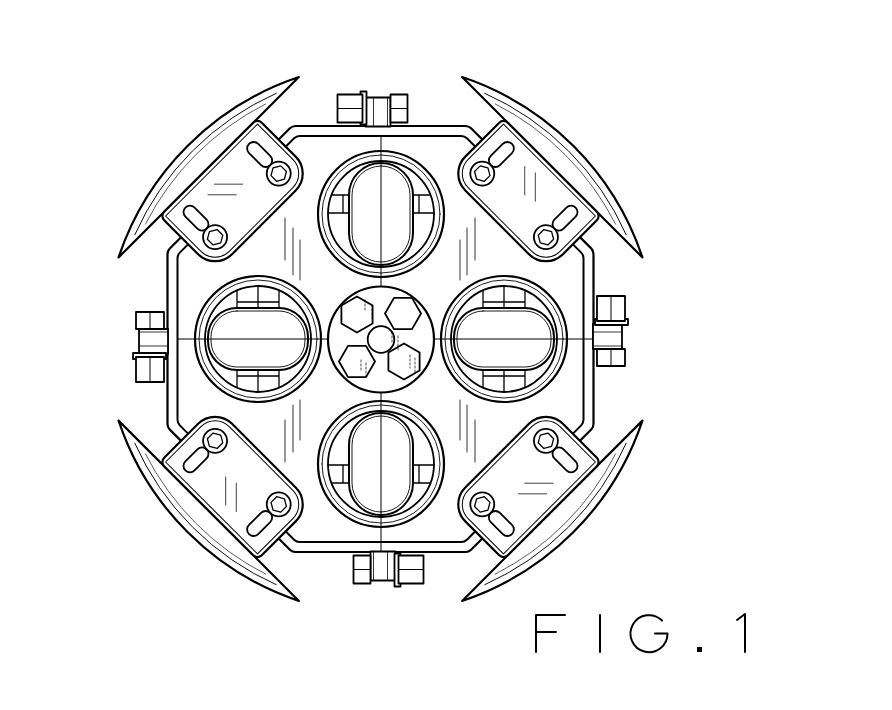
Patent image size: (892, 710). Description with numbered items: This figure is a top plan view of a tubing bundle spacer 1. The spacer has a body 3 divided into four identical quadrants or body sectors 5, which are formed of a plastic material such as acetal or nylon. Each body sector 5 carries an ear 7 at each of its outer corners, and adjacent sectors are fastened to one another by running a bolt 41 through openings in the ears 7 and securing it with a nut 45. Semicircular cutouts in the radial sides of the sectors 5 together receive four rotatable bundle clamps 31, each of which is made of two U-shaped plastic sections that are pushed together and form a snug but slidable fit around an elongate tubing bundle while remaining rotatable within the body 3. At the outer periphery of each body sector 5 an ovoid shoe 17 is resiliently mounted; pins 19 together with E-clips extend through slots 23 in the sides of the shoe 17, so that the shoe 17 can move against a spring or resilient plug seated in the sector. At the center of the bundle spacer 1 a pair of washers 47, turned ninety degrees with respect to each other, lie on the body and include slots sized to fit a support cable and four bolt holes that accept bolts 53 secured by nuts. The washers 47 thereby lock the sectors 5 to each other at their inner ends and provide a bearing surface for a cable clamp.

The tubing bundle spacer 1 is at (172, 96).
The body 3 is at (190, 281).
The body sector 5 is at (190, 374).
The ear 7 is at (136, 330).
The ovoid shoe 17 is at (588, 157).
The pin 19 is at (598, 257).
The slot 23 is at (471, 148).
The rotatable bundle clamp 31 is at (417, 170).
The bolt 41 is at (628, 357).
The nut 45 is at (628, 307).
The washer 47 is at (370, 296).
The bolt 53 is at (404, 312).